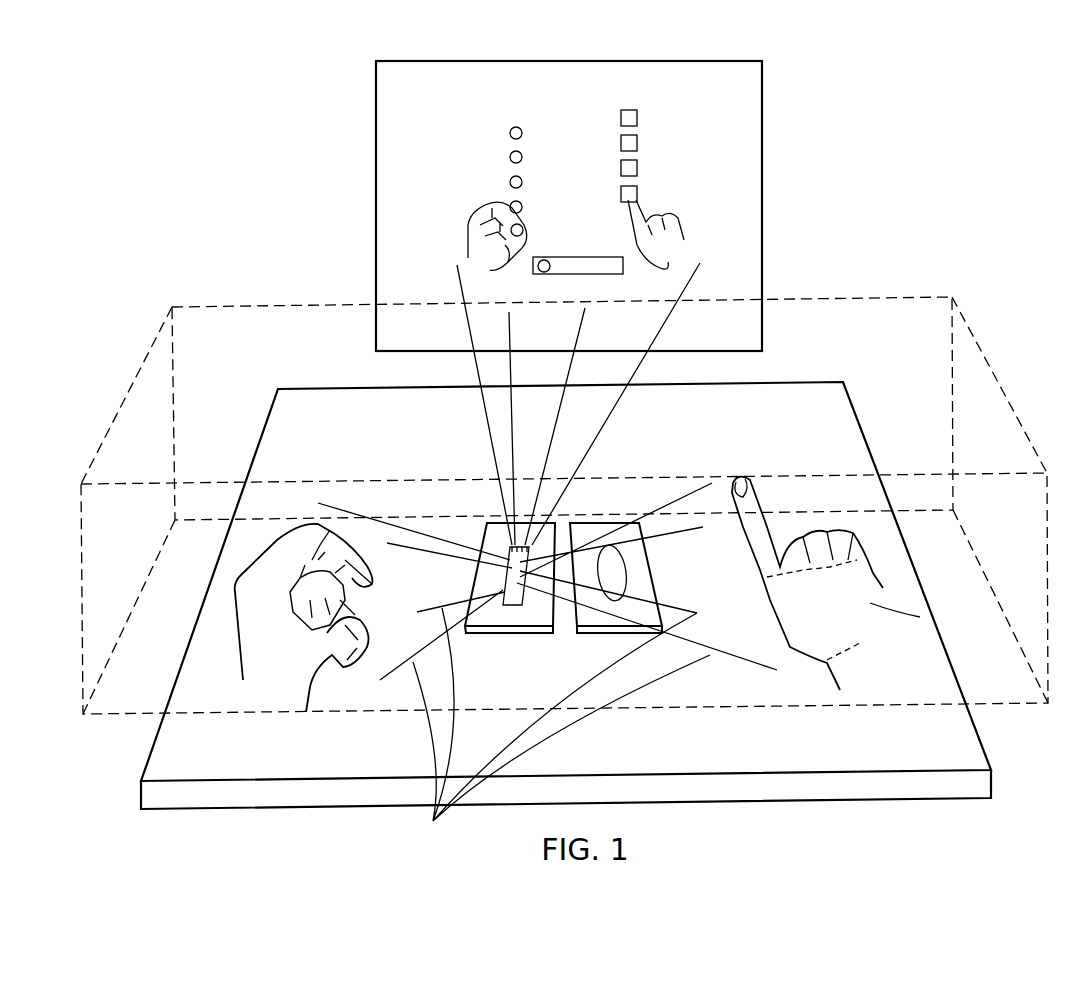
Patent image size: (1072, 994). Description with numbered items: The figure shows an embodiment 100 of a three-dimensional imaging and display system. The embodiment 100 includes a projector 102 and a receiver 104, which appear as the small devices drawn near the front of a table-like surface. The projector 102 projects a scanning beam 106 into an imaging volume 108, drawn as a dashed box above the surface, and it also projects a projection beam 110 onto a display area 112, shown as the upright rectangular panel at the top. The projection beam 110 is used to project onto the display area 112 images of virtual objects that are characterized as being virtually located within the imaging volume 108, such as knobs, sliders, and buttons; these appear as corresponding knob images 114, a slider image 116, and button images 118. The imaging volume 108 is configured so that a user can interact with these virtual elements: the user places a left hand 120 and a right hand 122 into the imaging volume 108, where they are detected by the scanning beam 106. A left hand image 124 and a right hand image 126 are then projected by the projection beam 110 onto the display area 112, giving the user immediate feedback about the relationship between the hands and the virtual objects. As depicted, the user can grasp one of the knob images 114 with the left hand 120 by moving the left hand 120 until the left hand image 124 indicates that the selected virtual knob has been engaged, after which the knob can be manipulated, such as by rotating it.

The embodiment of a 3D imaging and display system 100 is at (150, 102).
The projector 102 is at (518, 568).
The receiver 104 is at (613, 572).
The scanning beam 106 is at (550, 721).
The imaging volume 108 is at (968, 378).
The projection beam 110 is at (547, 445).
The display area 112 is at (747, 99).
The knob images 114 is at (510, 182).
The slider image 116 is at (597, 267).
The button images 118 is at (637, 118).
The left hand 120 is at (260, 613).
The right hand 122 is at (870, 603).
The left hand image 124 is at (475, 233).
The right hand image 126 is at (667, 243).